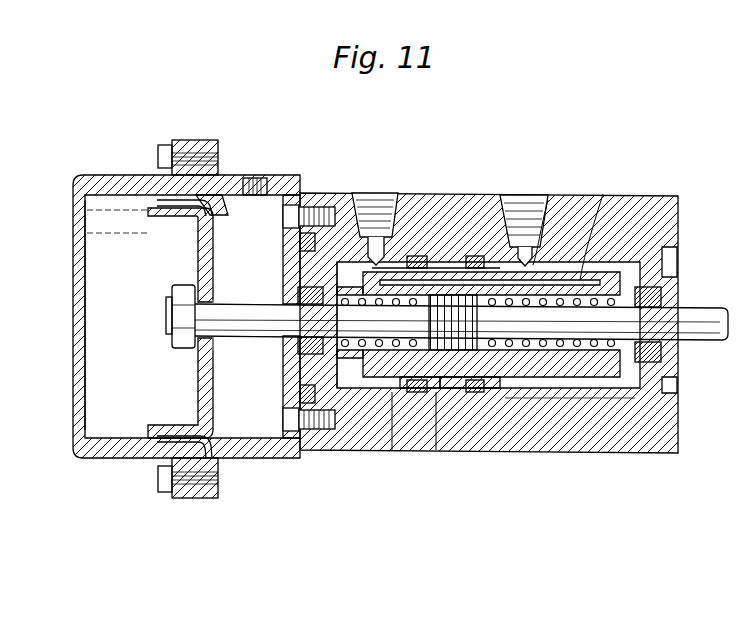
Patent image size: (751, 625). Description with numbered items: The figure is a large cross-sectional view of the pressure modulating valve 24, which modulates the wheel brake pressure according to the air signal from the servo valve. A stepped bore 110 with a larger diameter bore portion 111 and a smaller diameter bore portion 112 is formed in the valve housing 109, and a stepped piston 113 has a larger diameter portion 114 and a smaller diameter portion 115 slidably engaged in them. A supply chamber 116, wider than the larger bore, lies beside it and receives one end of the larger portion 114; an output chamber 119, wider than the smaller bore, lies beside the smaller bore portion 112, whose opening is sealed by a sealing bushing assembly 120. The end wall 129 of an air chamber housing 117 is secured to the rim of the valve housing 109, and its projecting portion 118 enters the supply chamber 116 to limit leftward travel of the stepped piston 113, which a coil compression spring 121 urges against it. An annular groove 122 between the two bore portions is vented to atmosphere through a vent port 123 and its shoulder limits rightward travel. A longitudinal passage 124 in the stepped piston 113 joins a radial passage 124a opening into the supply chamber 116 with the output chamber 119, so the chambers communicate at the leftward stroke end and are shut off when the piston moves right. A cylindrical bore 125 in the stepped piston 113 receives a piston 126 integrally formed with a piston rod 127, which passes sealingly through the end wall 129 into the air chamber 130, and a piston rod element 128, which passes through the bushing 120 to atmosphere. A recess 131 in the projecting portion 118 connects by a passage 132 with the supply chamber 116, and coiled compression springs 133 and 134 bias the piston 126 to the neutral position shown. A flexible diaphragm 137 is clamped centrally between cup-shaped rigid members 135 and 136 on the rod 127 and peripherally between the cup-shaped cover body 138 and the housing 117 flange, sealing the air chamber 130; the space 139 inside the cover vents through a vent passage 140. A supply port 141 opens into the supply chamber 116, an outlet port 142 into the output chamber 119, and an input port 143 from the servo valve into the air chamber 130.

The pressure modulating valve 24 is at (679, 450).
The valve housing 109 is at (546, 200).
The stepped bore 110 is at (417, 266).
The larger diameter bore portion 111 is at (393, 453).
The smaller diameter bore portion 112 is at (497, 377).
The stepped piston 113 is at (462, 388).
The larger diameter portion of stepped piston 114 is at (378, 388).
The smaller diameter portion of stepped piston 115 is at (470, 352).
The supply chamber 116 is at (328, 187).
The air chamber housing 117 is at (282, 459).
The projecting portion 118 is at (325, 452).
The output chamber 119 is at (603, 194).
The sealing bushing assembly 120 is at (679, 279).
The coil compression spring 121 is at (608, 400).
The annular groove 122 is at (428, 388).
The vent port 123 is at (440, 453).
The longitudinally extending passage 124 is at (452, 272).
The radial passage 124a is at (362, 295).
The cylindrical bore 125 is at (645, 287).
The piston 126 is at (506, 350).
The piston rod 127 is at (257, 306).
The piston rod element 128 is at (712, 341).
The end wall 129 is at (292, 385).
The air chamber 130 is at (264, 402).
The recess 131 is at (345, 452).
The passage 132 is at (326, 182).
The coiled compression spring 133 is at (478, 256).
The coiled compression spring 134 is at (556, 306).
The cup-shaped rigid member 135 is at (212, 232).
The cup-shaped rigid member 136 is at (185, 236).
The flexible diaphragm 137 is at (195, 132).
The cup-shaped cover body 138 is at (84, 338).
The space inside cover member 139 is at (136, 322).
The vent passage 140 is at (103, 460).
The supply port 141 is at (382, 189).
The outlet port 142 is at (553, 196).
The input port 143 is at (287, 160).